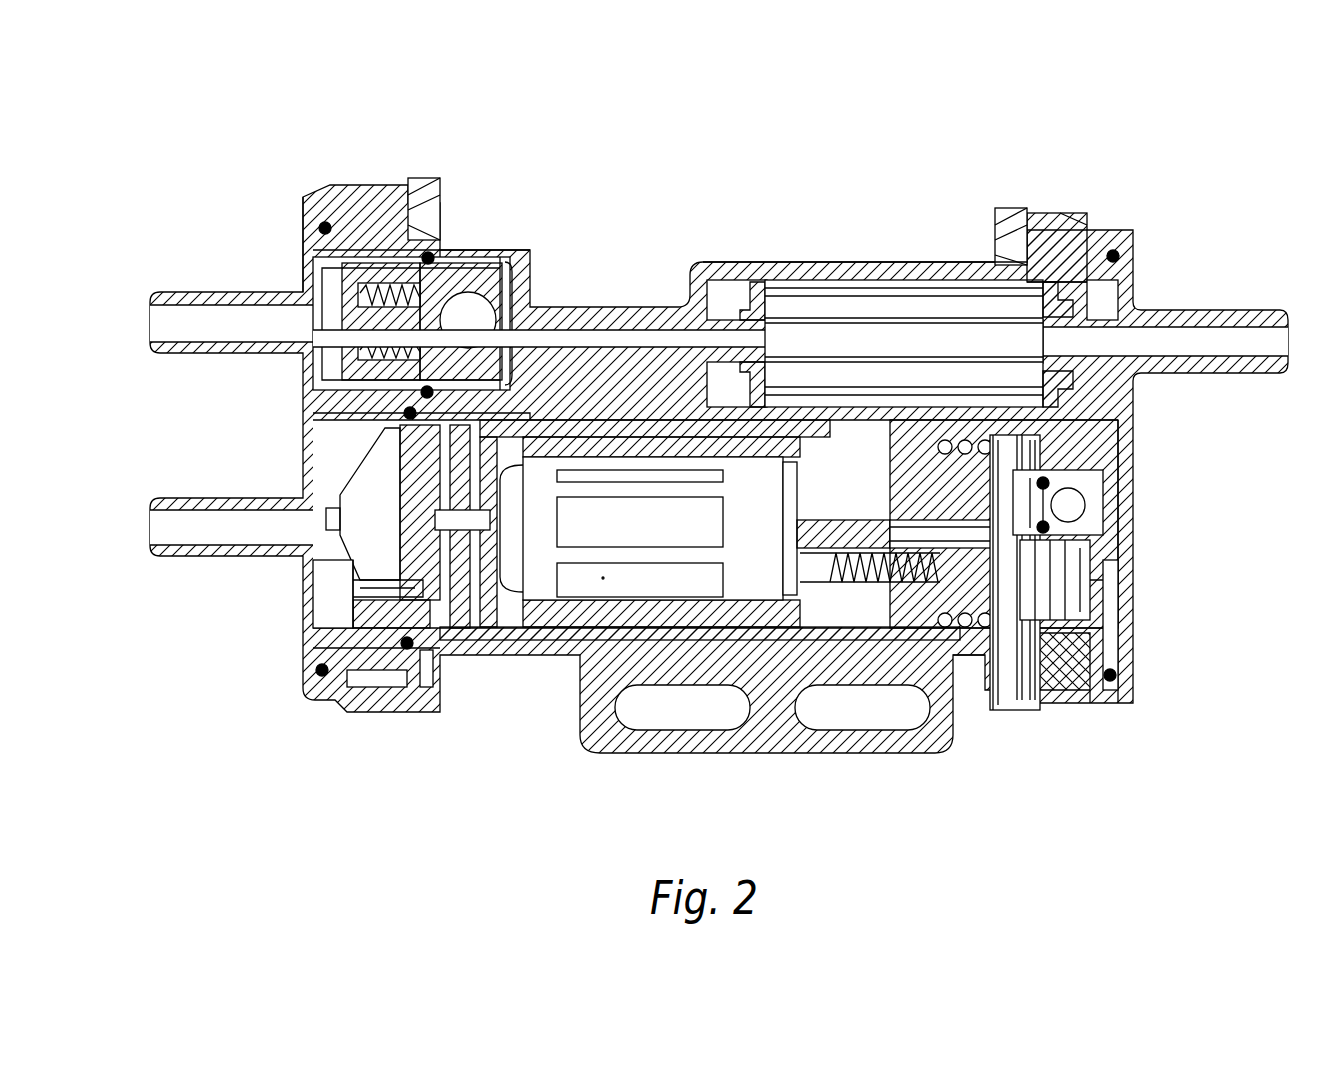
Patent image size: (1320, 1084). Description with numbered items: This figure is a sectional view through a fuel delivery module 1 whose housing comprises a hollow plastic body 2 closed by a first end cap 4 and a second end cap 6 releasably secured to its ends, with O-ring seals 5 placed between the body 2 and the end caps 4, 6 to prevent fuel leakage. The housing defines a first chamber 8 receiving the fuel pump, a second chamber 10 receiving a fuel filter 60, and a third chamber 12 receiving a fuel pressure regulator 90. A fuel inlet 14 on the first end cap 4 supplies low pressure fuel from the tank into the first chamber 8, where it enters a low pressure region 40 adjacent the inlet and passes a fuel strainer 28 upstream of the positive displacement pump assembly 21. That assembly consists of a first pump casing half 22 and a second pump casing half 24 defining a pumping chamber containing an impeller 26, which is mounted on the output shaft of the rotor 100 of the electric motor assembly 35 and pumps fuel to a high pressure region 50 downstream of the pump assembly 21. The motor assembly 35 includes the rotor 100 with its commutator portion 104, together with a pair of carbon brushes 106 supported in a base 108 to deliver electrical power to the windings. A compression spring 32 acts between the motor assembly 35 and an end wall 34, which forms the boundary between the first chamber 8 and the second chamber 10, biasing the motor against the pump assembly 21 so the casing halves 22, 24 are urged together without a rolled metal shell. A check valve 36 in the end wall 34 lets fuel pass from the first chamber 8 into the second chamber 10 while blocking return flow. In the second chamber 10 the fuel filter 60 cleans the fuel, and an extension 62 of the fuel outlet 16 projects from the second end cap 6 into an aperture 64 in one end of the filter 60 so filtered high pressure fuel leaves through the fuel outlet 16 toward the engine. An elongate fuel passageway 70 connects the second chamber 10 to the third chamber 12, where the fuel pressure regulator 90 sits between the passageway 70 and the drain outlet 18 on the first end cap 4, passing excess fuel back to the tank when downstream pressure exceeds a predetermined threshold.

The fuel delivery module 1 is at (880, 150).
The hollow body 2 is at (773, 250).
The first end cap 4 is at (295, 188).
The O-ring seals 5 is at (325, 222).
The second end cap 6 is at (1135, 705).
The first chamber 8 is at (660, 660).
The second chamber 10 is at (866, 288).
The third chamber 12 is at (505, 247).
The fuel inlet 14 is at (168, 553).
The fuel outlet 16 is at (1245, 382).
The drain outlet 18 is at (200, 298).
The positive displacement pump assembly 21 is at (437, 817).
The first pump casing half 22 is at (423, 630).
The second pump casing half 24 is at (483, 645).
The impeller 26 is at (462, 578).
The fuel strainer 28 is at (367, 514).
The compression spring 32 is at (1052, 622).
The end wall 34 is at (1082, 600).
The electric motor assembly 35 is at (603, 578).
The check valve 36 is at (1075, 500).
The low pressure region 40 is at (338, 605).
The high pressure region 50 is at (1010, 635).
The fuel filter 60 is at (921, 302).
The extension 62 is at (1100, 318).
The aperture 64 is at (1058, 392).
The elongate fuel passageway 70 is at (625, 320).
The fuel pressure regulator 90 is at (437, 285).
The rotor 100 is at (755, 585).
The commutator portion 104 is at (790, 620).
The carbon brushes 106 is at (817, 585).
The base 108 is at (930, 632).